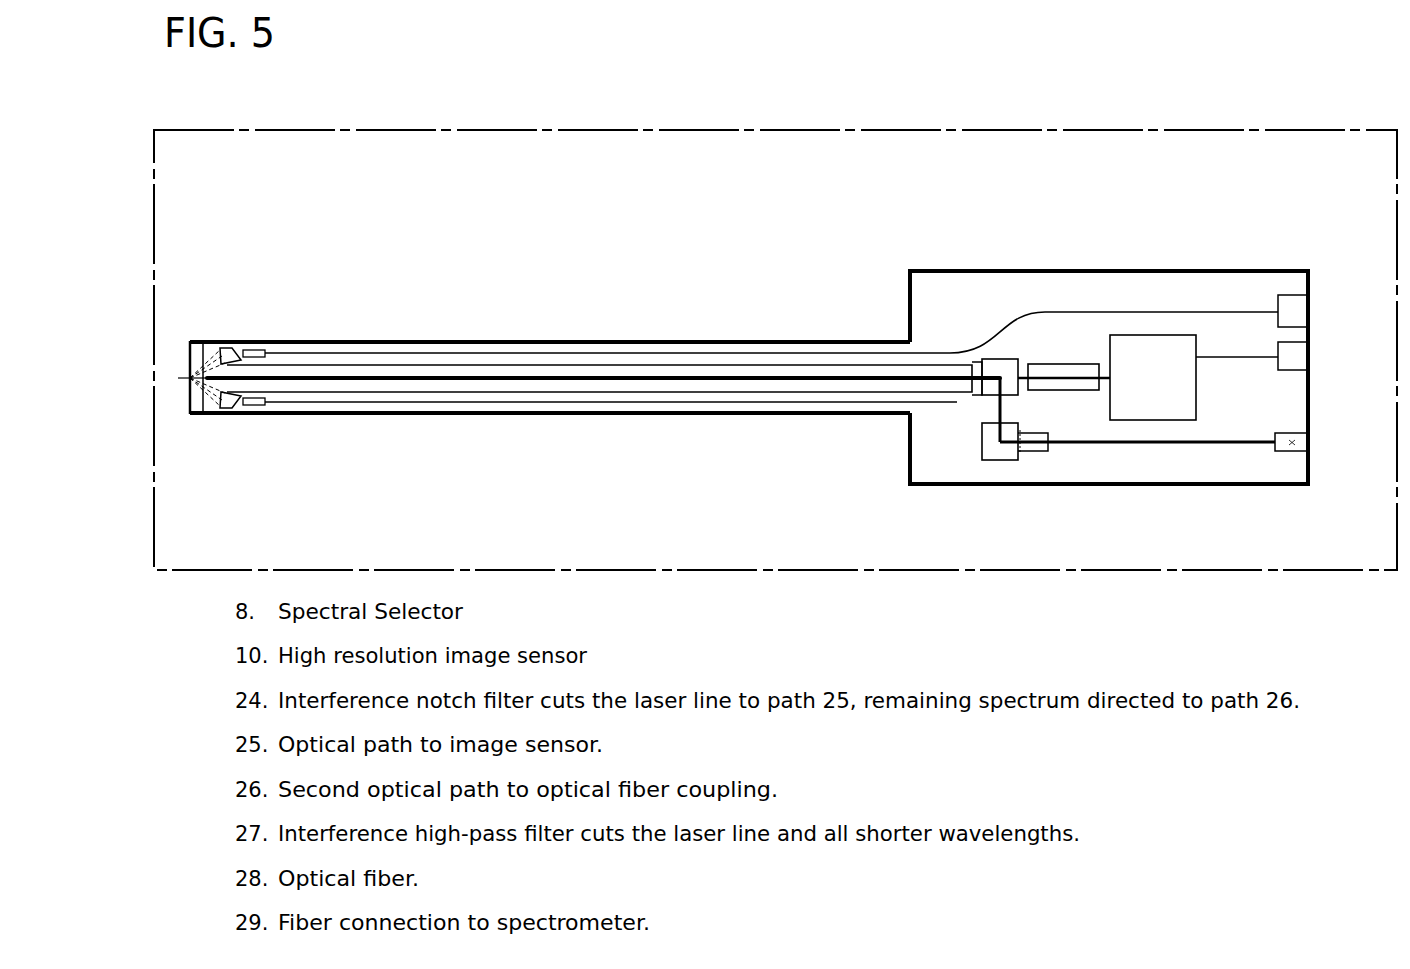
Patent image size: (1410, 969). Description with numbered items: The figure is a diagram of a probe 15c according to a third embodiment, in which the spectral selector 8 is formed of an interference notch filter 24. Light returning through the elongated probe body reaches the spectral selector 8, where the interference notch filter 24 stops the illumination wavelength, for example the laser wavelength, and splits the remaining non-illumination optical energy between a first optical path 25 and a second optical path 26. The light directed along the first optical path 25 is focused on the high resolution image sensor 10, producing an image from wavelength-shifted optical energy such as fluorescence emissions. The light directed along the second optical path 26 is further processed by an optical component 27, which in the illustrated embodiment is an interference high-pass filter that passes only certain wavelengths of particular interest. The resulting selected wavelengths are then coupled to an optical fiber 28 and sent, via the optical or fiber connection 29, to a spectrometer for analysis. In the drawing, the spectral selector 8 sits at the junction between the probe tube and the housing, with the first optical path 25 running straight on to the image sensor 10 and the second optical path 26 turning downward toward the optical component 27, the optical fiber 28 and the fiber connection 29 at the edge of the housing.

The probe 15c is at (770, 130).
The spectral selector 8 is at (1002, 358).
The high resolution image sensor 10 is at (1158, 335).
The interference notch filter 24 is at (978, 360).
The first optical path 25 is at (1055, 377).
The second optical path 26 is at (997, 412).
The optical component 27 is at (982, 458).
The optical fiber 28 is at (1118, 443).
The fiber connection 29 is at (1311, 446).